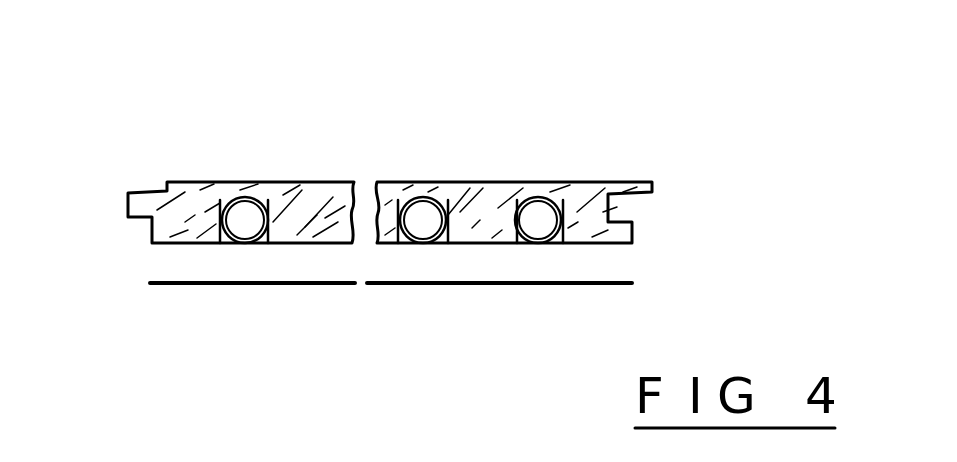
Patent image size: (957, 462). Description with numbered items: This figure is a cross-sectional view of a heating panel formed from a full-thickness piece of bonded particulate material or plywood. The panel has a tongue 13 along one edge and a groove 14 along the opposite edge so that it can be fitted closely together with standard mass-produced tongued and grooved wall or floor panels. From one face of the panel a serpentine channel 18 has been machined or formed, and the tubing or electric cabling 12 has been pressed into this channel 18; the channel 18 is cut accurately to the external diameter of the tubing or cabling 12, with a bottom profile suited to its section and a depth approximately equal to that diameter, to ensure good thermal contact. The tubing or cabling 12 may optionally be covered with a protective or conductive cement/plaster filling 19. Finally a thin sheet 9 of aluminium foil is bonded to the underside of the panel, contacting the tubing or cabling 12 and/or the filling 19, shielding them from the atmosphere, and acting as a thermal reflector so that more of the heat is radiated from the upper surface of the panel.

The sheet of aluminium foil 9 is at (240, 283).
The tubing or electric cabling 12 is at (431, 230).
The tongue 13 is at (128, 195).
The groove 14 is at (637, 208).
The serpentine channel 18 is at (256, 198).
The cement/plaster filling 19 is at (552, 244).